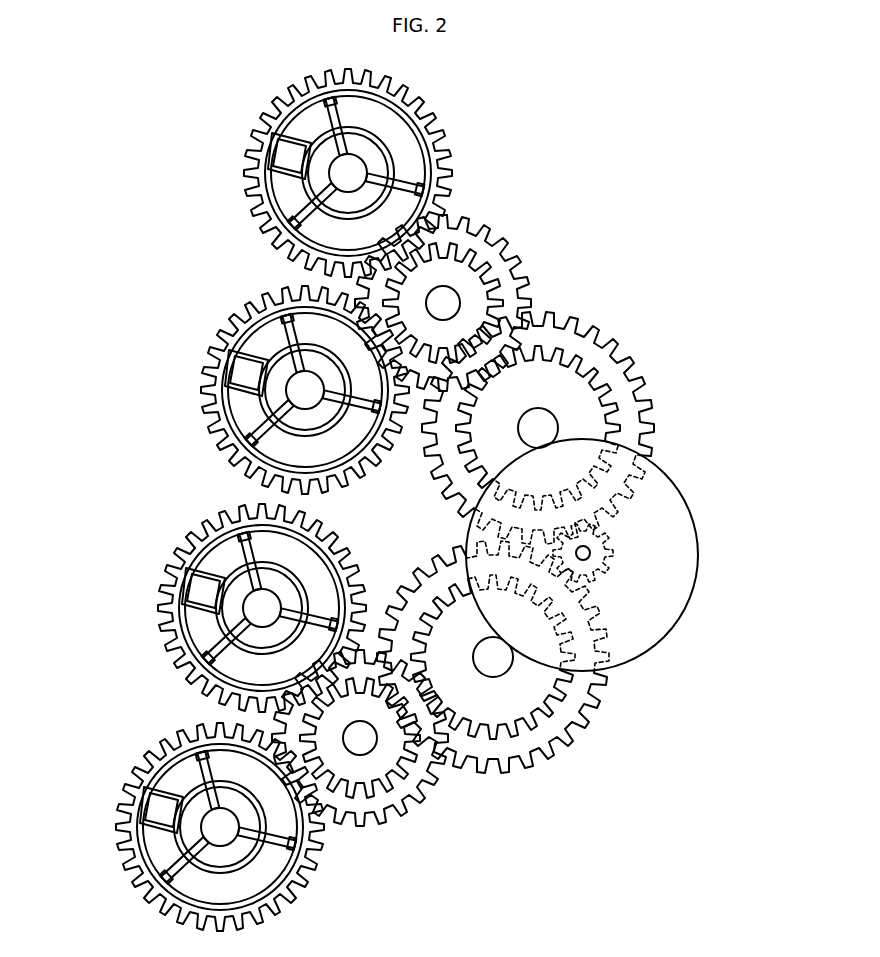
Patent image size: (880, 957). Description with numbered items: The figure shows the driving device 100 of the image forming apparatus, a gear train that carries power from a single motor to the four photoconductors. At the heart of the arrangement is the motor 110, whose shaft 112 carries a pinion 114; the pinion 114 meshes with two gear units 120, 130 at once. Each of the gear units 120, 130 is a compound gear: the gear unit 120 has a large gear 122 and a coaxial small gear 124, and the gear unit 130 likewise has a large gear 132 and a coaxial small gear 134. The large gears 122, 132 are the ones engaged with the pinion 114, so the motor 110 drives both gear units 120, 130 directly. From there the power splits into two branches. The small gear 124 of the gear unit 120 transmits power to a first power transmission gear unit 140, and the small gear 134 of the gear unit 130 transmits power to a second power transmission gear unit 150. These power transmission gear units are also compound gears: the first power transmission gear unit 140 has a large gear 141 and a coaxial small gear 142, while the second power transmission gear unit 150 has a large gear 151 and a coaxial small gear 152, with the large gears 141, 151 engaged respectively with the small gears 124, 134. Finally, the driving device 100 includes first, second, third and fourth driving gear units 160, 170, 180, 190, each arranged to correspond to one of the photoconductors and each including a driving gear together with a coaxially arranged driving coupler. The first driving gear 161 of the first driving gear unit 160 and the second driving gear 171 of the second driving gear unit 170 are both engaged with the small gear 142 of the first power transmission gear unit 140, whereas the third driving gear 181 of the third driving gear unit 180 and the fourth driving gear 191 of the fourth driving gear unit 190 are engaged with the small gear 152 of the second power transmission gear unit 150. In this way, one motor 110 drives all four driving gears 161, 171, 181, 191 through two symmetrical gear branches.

The driving device 100 is at (413, 938).
The motor 110 is at (692, 514).
The shaft 112 is at (592, 553).
The pinion 114 is at (597, 568).
The gear unit 120 is at (593, 748).
The large gear 122 is at (535, 748).
The small gear 124 is at (490, 755).
The gear unit 130 is at (657, 376).
The large gear 132 is at (650, 403).
The small gear 134 is at (648, 433).
The first power transmission gear unit 140 is at (427, 818).
The large gear 141 is at (392, 815).
The small gear 142 is at (350, 813).
The second power transmission gear unit 150 is at (507, 224).
The large gear 151 is at (522, 282).
The small gear 152 is at (506, 251).
The first driving gear unit 160 is at (140, 745).
The first driving gear 161 is at (130, 829).
The second driving gear unit 170 is at (178, 527).
The second driving gear 171 is at (168, 612).
The third driving gear unit 180 is at (217, 318).
The third driving gear 181 is at (208, 400).
The fourth driving gear unit 190 is at (243, 136).
The fourth driving gear 191 is at (252, 184).